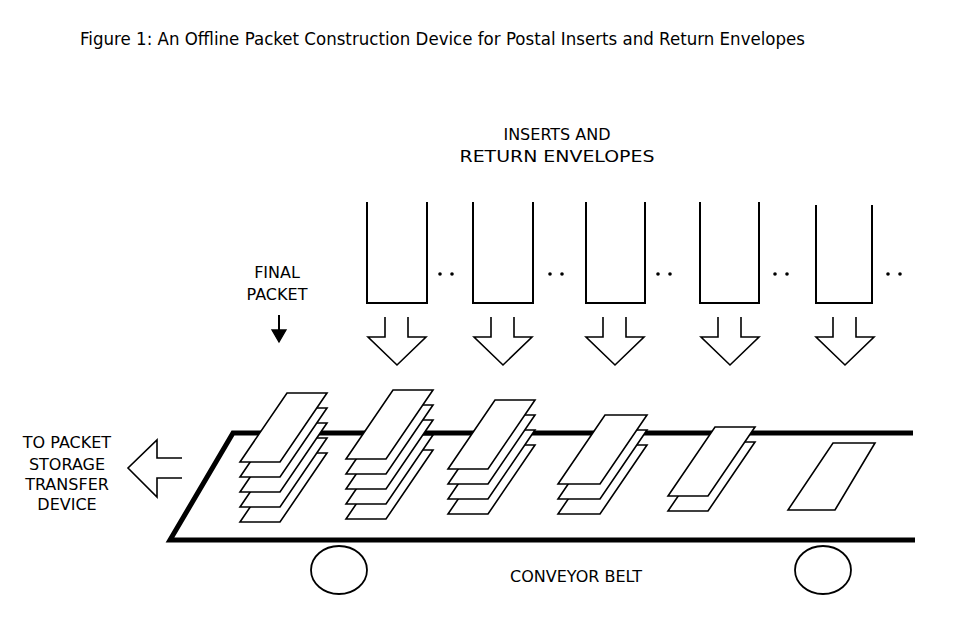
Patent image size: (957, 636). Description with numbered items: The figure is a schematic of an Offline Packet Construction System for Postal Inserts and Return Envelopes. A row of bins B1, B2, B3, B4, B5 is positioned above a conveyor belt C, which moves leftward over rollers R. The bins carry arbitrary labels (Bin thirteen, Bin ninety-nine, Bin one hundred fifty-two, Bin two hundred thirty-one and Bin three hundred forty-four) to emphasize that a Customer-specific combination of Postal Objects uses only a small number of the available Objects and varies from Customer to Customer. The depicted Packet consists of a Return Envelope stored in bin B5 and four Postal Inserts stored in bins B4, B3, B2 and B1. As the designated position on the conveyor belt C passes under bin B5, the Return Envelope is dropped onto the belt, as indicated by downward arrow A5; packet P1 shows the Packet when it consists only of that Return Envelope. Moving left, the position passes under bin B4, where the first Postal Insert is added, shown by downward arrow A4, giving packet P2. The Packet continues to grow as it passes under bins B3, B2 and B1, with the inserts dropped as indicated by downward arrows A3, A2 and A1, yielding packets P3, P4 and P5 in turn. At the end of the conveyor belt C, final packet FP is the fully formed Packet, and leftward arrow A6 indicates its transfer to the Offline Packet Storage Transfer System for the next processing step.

The bin B1 is at (397, 239).
The bin B2 is at (503, 239).
The bin B3 is at (615, 239).
The bin B4 is at (730, 239).
The bin B5 is at (843, 239).
The downward arrow A1 is at (397, 341).
The downward arrow A2 is at (503, 341).
The downward arrow A3 is at (615, 341).
The downward arrow A4 is at (730, 341).
The downward arrow A5 is at (845, 341).
The leftward arrow A6 is at (155, 468).
The conveyor belt C is at (542, 486).
The rollers R is at (581, 570).
The packet P1 is at (831, 476).
The packet P2 is at (711, 469).
The packet P3 is at (602, 464).
The packet P4 is at (491, 457).
The packet P5 is at (389, 454).
The final packet FP is at (283, 457).